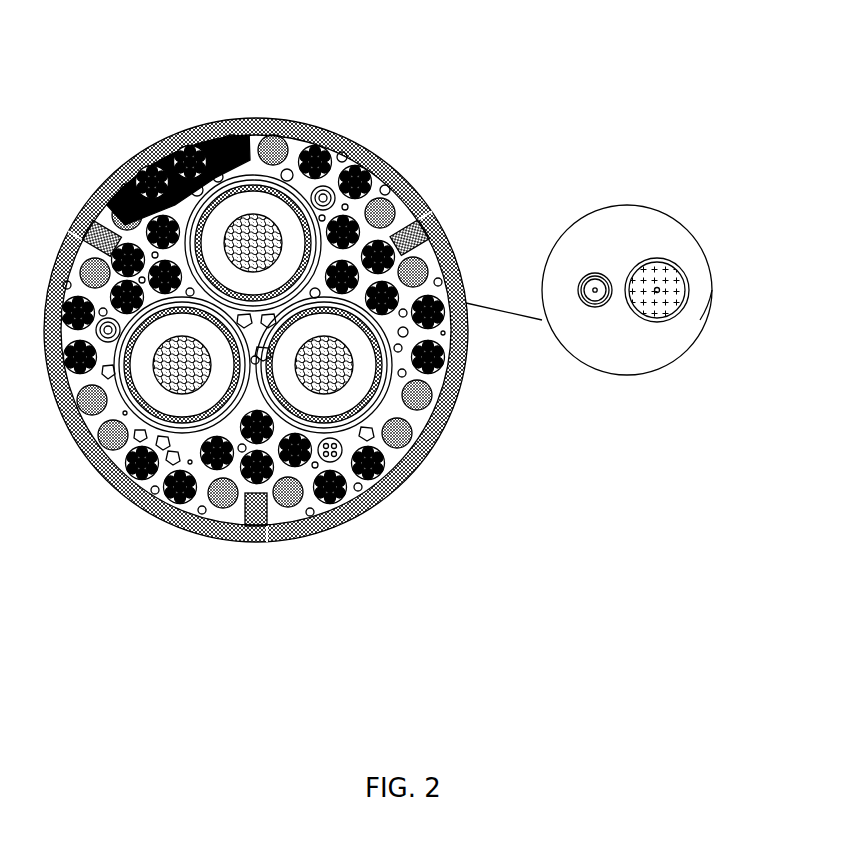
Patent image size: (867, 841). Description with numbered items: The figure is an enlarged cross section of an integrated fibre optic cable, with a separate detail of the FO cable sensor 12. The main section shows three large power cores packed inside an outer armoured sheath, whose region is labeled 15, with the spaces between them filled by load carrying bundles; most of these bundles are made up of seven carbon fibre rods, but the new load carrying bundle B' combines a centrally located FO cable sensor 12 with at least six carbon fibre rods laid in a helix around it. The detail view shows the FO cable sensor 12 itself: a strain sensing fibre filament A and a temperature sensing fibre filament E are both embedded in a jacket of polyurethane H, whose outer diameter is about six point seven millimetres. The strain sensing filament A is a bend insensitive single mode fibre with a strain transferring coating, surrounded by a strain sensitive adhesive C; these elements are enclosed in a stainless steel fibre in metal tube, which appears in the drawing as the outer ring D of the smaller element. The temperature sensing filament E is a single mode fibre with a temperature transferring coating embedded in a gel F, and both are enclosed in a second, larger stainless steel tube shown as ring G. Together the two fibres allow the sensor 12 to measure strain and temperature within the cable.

The outer sheath / armor of cable 15 is at (161, 133).
The load carrying bundle B' is at (271, 375).
The FO cable sensor 12 is at (633, 207).
The strain sensing fibre filament A is at (592, 290).
The strain sensitive adhesive C is at (586, 283).
The outer layer of filler element D is at (590, 274).
The temperature sensing fibre filament E is at (658, 288).
The gel F is at (670, 277).
The outer jacket of member G is at (684, 282).
The jacket of polyurethane H is at (710, 287).